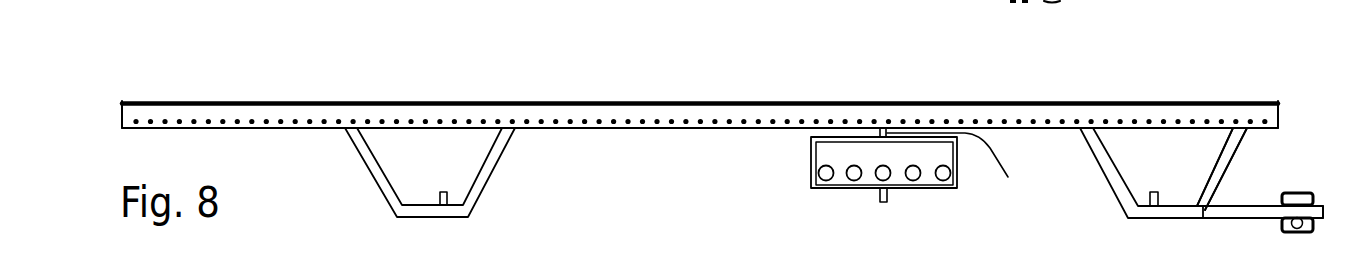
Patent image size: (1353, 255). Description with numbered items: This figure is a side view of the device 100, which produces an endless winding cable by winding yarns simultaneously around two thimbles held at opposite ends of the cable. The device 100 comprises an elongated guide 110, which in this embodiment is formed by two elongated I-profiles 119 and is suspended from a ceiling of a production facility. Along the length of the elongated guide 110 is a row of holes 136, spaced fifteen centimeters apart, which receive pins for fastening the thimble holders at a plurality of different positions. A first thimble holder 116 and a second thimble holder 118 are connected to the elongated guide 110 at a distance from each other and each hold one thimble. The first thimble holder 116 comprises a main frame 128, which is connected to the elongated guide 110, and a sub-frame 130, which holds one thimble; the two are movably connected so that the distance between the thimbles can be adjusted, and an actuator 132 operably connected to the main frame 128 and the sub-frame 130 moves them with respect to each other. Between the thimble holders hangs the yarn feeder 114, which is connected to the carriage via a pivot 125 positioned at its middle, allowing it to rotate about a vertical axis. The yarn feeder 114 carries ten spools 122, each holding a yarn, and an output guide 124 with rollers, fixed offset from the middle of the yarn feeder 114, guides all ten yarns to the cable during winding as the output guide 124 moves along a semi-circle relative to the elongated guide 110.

The device 100 is at (255, 75).
The elongated guide 110 is at (375, 93).
The elongated I-profiles 119 is at (685, 105).
The holes 136 is at (830, 122).
The second thimble holder 118 is at (460, 155).
The first thimble holder 116 is at (1172, 153).
The main frame 128 is at (1232, 153).
The sub-frame 130 is at (1148, 193).
The actuator 132 is at (1263, 232).
The yarn feeder 114 is at (853, 198).
The spool 122 is at (826, 173).
The output guide 124 is at (882, 203).
The pivot 125 is at (969, 174).